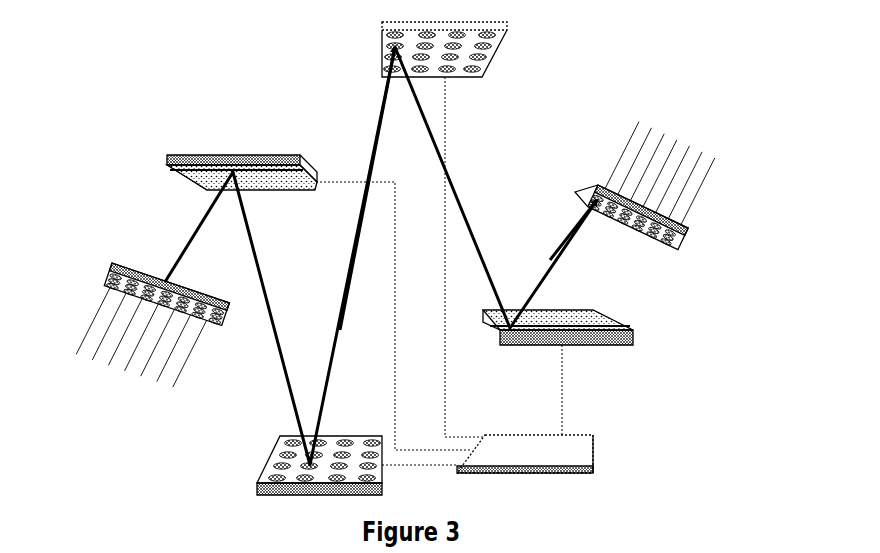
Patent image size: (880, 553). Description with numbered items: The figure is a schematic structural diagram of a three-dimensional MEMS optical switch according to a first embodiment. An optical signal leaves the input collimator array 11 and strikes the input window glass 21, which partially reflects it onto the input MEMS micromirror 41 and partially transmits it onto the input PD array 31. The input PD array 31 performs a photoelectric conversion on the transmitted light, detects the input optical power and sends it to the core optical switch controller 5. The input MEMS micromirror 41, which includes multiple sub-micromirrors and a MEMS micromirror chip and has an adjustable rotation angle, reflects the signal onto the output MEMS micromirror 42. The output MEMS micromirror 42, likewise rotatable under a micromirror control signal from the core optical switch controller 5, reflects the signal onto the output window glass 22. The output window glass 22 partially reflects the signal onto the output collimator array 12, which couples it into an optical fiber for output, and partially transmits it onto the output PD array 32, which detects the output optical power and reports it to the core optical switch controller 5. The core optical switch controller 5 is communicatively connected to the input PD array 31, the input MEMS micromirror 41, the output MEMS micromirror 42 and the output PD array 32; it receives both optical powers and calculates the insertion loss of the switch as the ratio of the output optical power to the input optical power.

The core optical switch controller 5 is at (572, 455).
The input collimator array 11 is at (127, 265).
The output collimator array 12 is at (688, 232).
The input window glass 21 is at (165, 168).
The output window glass 22 is at (597, 310).
The input PD array 31 is at (283, 157).
The output PD array 32 is at (633, 343).
The input MEMS micromirror 41 is at (278, 463).
The output MEMS micromirror 42 is at (473, 67).